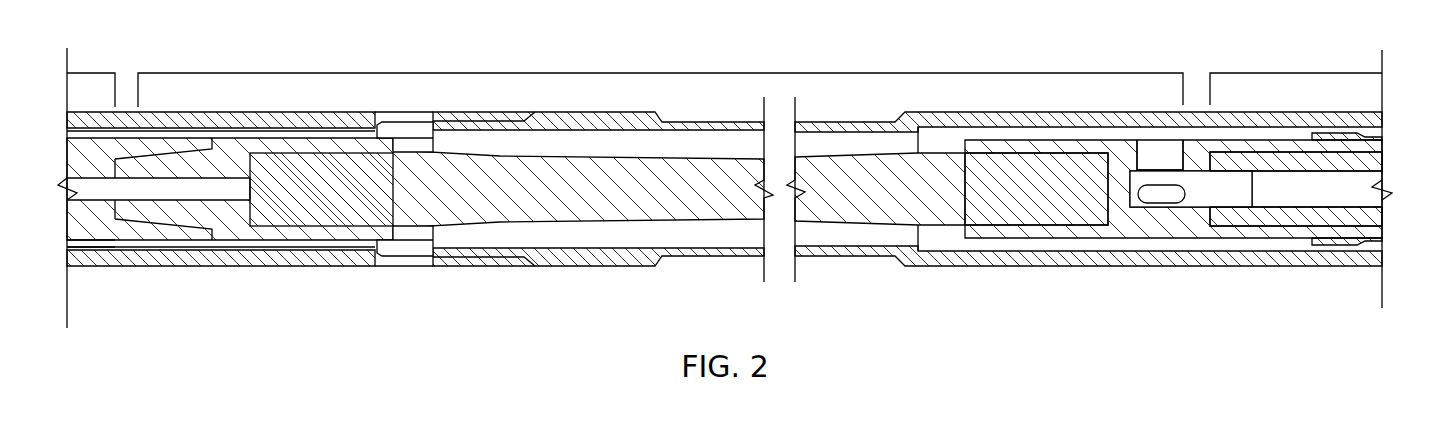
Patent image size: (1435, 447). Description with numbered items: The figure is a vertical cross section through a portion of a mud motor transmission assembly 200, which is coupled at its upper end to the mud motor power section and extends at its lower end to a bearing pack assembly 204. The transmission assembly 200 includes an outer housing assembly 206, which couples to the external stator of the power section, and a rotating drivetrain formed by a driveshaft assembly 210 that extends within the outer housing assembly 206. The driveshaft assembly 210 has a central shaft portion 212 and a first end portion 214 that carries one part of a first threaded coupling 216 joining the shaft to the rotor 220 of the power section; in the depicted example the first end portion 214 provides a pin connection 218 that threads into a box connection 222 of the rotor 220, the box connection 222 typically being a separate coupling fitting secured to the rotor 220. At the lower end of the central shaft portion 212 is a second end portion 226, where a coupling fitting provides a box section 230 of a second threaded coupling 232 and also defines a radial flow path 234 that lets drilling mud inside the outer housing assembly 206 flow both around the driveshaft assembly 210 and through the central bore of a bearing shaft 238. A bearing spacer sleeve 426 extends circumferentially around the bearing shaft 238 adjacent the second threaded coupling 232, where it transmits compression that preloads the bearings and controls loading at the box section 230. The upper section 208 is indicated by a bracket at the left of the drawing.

The mud motor transmission assembly 200 is at (665, 72).
The bearing pack assembly 204 is at (1295, 73).
The outer housing assembly 206 is at (928, 112).
The upper tool section 208 is at (92, 73).
The driveshaft assembly 210 is at (694, 218).
The central shaft portion 212 is at (862, 222).
The first end portion 214 is at (320, 240).
The first threaded coupling 216 is at (252, 256).
The pin connection 218 is at (163, 155).
The rotor 220 is at (103, 243).
The box connection 222 is at (100, 228).
The second end portion 226 is at (1138, 237).
The box section 230 is at (1220, 233).
The second threaded coupling 232 is at (1285, 192).
The radial flow path 234 is at (1158, 152).
The bearing shaft 238 is at (1372, 163).
The bearing spacer sleeve 426 is at (1335, 235).